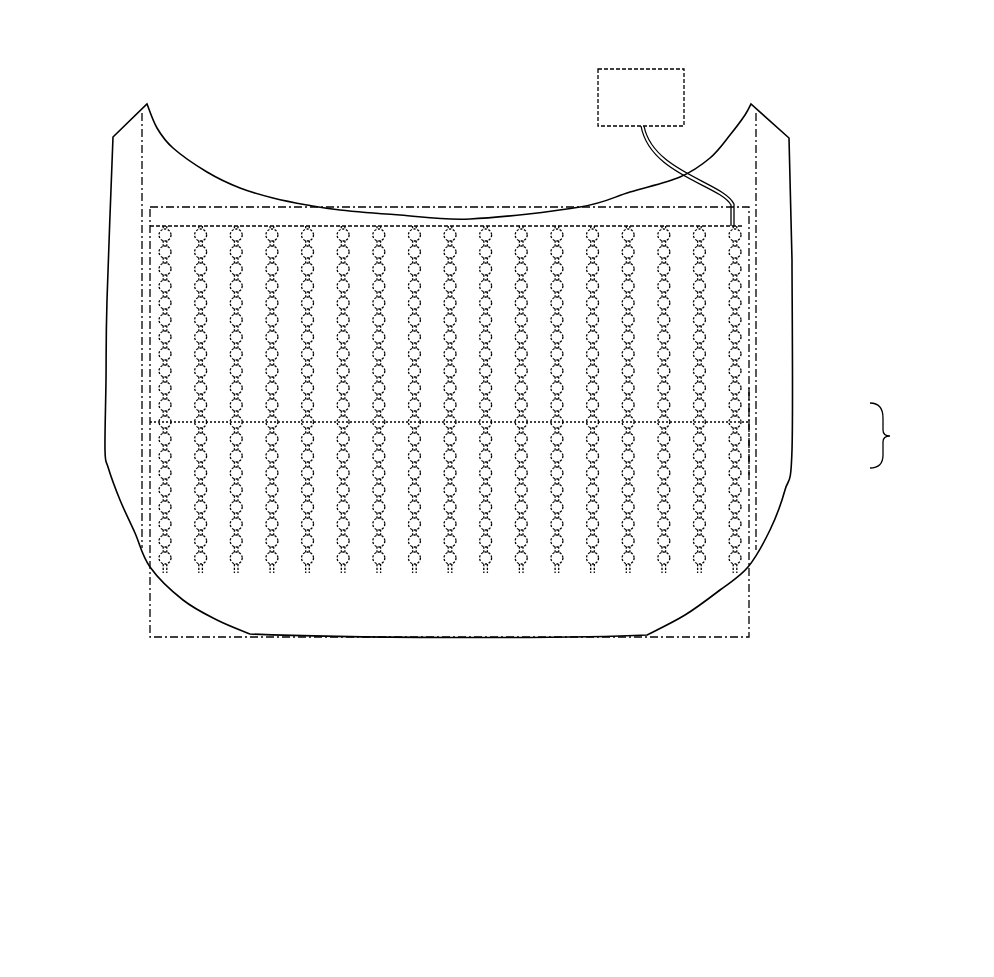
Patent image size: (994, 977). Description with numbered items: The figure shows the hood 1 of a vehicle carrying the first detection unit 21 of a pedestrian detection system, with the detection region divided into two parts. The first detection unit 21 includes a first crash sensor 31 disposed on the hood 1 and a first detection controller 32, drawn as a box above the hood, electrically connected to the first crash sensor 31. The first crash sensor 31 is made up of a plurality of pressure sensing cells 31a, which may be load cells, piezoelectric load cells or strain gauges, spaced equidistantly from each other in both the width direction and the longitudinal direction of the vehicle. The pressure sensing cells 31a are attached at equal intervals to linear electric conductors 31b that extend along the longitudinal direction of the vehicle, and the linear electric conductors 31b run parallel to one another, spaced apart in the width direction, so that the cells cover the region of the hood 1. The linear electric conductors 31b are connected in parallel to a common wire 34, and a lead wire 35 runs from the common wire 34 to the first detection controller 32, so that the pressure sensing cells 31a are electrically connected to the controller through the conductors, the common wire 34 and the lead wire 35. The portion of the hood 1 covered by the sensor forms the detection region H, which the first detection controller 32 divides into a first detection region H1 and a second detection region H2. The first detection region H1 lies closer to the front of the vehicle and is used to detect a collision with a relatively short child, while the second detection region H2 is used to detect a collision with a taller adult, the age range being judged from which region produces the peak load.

The hood 1 is at (95, 385).
The first detection unit 21 is at (799, 232).
The first crash sensor 31 is at (764, 366).
The pressure sensing cells 31a is at (749, 290).
The linear electric conductor 31b is at (757, 315).
The first detection controller 32 is at (641, 69).
The common wire 34 is at (290, 226).
The lead wire 35 is at (737, 200).
The detection region H is at (891, 435).
The first detection region H1 is at (750, 475).
The second detection region H2 is at (750, 388).